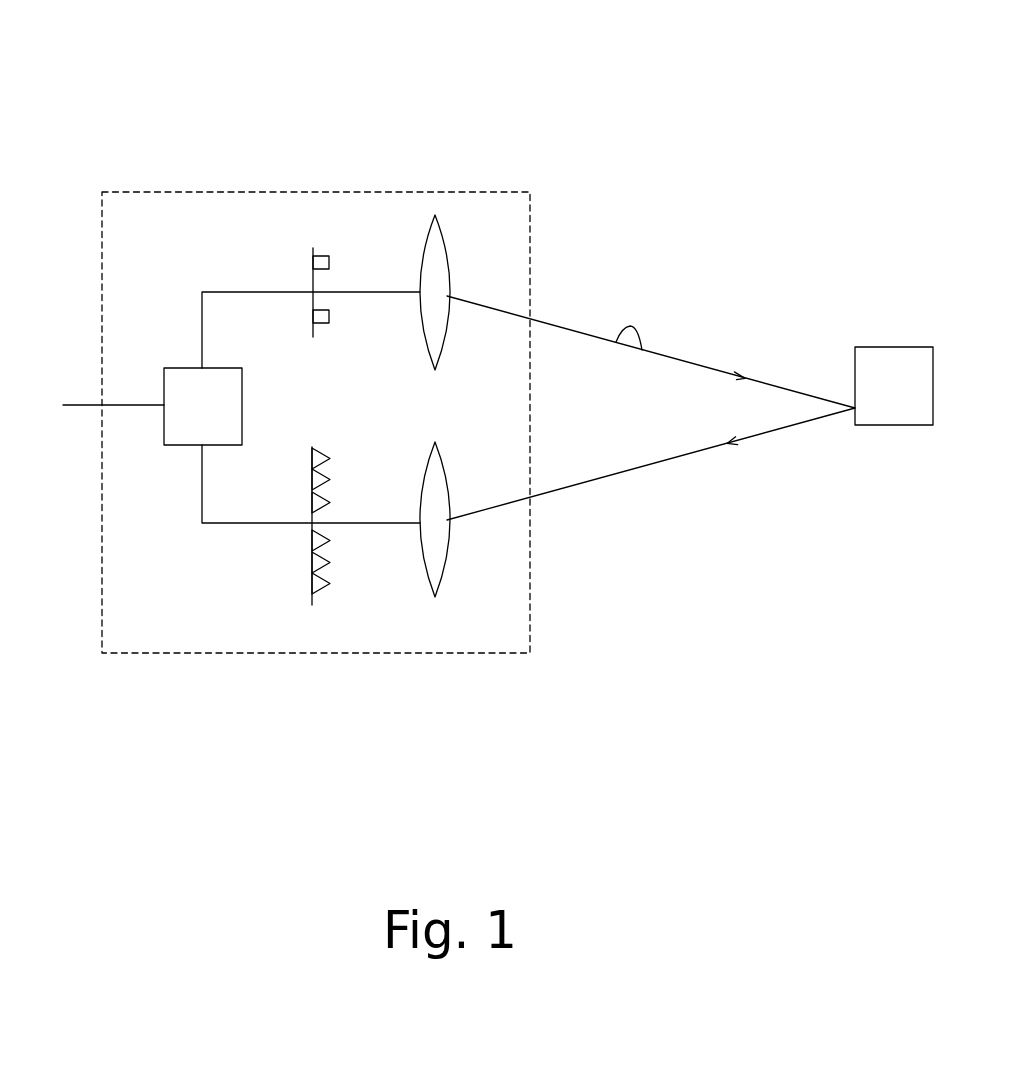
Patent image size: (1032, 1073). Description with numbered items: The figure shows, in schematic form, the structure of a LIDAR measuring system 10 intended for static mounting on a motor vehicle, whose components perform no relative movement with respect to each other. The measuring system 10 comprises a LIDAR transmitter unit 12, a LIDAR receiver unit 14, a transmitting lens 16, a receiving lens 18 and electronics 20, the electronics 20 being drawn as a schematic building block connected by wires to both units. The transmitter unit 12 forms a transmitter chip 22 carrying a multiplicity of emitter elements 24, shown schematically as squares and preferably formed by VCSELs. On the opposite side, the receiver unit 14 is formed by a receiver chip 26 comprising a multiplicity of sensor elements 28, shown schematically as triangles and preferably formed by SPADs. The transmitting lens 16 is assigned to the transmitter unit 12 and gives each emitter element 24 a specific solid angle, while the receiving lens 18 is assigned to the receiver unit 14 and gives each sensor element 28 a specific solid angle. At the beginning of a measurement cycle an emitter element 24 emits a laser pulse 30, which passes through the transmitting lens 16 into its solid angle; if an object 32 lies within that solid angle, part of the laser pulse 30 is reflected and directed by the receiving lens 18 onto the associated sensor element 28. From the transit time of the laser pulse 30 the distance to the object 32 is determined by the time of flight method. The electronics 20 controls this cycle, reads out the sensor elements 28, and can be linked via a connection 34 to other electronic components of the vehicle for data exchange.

The LIDAR measuring system 10 is at (600, 131).
The LIDAR transmitter unit 12 is at (311, 184).
The LIDAR receiver unit 14 is at (306, 626).
The transmitting lens 16 is at (447, 265).
The receiving lens 18 is at (447, 557).
The electronics 20 is at (188, 424).
The transmitter chip 22 is at (313, 250).
The emitter element 24 is at (330, 263).
The receiver chip 26 is at (312, 583).
The sensor element 28 is at (329, 588).
The laser pulse 30 is at (642, 338).
The object 32 is at (882, 406).
The connection 34 is at (82, 405).